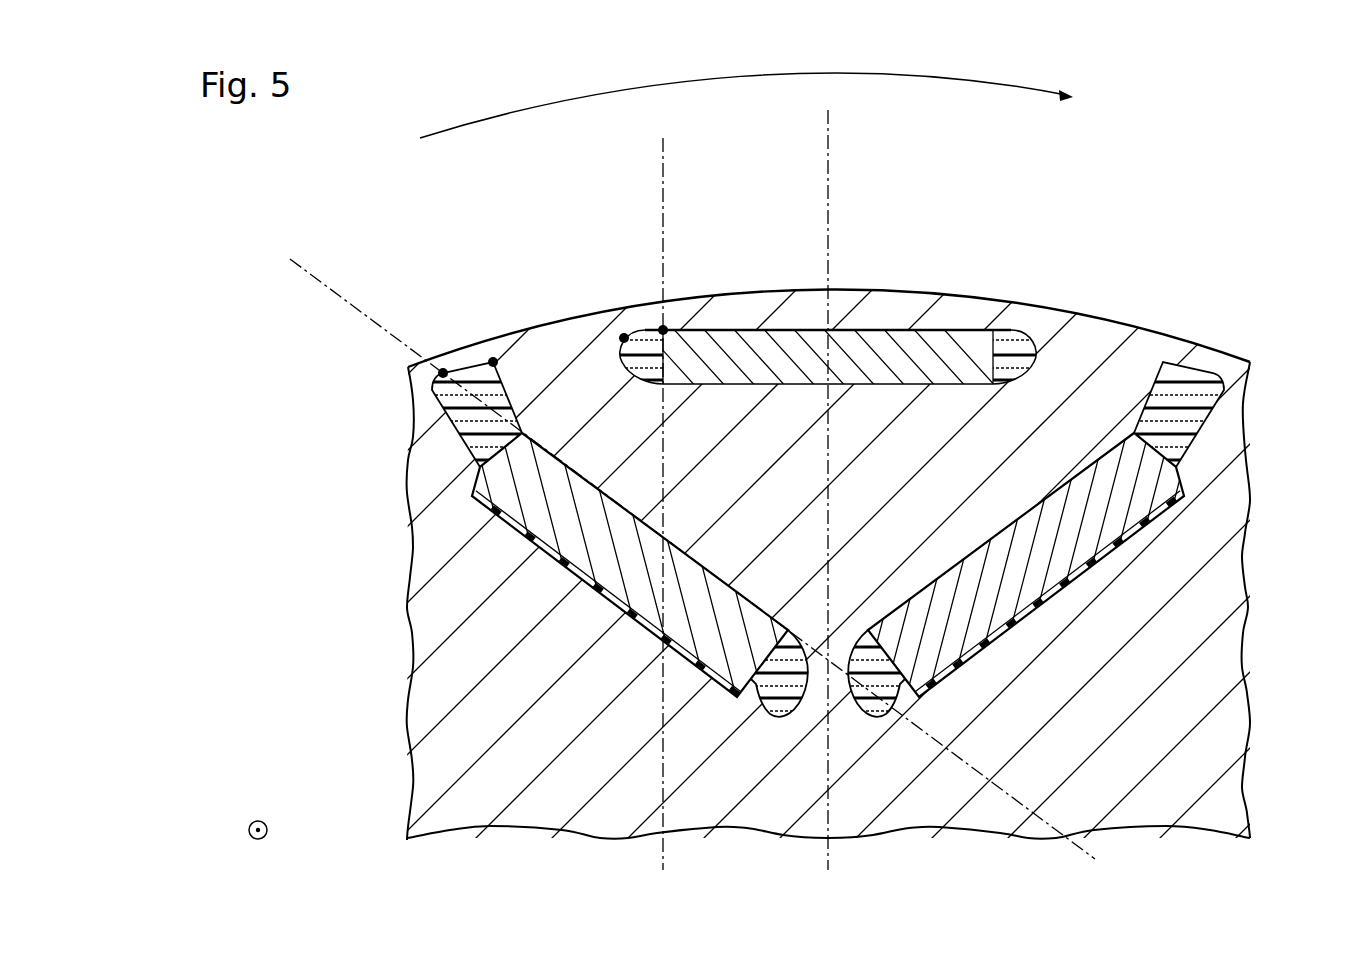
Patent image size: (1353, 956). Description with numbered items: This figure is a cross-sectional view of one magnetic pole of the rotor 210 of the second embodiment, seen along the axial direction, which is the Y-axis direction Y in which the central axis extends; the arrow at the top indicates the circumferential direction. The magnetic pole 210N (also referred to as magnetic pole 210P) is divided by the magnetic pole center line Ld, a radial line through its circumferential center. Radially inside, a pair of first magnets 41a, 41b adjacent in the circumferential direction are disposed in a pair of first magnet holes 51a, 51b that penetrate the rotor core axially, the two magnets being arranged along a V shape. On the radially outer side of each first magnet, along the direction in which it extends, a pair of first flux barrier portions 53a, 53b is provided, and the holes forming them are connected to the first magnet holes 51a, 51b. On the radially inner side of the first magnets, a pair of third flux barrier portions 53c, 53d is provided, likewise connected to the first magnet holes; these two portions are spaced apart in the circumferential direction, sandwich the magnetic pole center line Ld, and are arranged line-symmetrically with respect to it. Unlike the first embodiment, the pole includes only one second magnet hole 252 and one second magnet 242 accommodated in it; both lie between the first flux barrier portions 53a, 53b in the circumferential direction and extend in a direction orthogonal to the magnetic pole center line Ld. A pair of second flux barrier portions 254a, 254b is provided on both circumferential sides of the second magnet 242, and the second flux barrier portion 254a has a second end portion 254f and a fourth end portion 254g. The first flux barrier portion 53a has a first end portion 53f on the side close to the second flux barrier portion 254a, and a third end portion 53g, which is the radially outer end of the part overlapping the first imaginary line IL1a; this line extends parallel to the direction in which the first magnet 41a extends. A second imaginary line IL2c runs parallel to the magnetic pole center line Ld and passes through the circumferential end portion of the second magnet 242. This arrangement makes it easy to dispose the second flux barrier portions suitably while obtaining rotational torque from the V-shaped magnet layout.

The rotor 210 is at (1150, 145).
The magnetic pole 210P is at (789, 256).
The magnetic pole 210N is at (1130, 325).
The second magnet 242 is at (875, 346).
The second magnet hole 252 is at (934, 330).
The second flux barrier portion 254a is at (643, 330).
The second flux barrier portion 254b is at (1022, 333).
The second end portion 254f is at (622, 336).
The fourth end portion 254g is at (665, 327).
The first magnet 41a is at (540, 500).
The first magnet 41b is at (1063, 533).
The first magnet hole 51a is at (684, 672).
The first magnet hole 51b is at (1018, 612).
The first flux barrier portion 53a is at (466, 418).
The first flux barrier portion 53b is at (1199, 433).
The third flux barrier portion 53c is at (778, 700).
The third flux barrier portion 53d is at (868, 722).
The first end portion 53f is at (493, 359).
The third end portion 53g is at (443, 371).
The first imaginary line IL1a is at (305, 268).
The second imaginary line IL2c is at (663, 168).
The magnetic pole center line Ld is at (834, 135).
The Y-axis direction Y is at (257, 849).